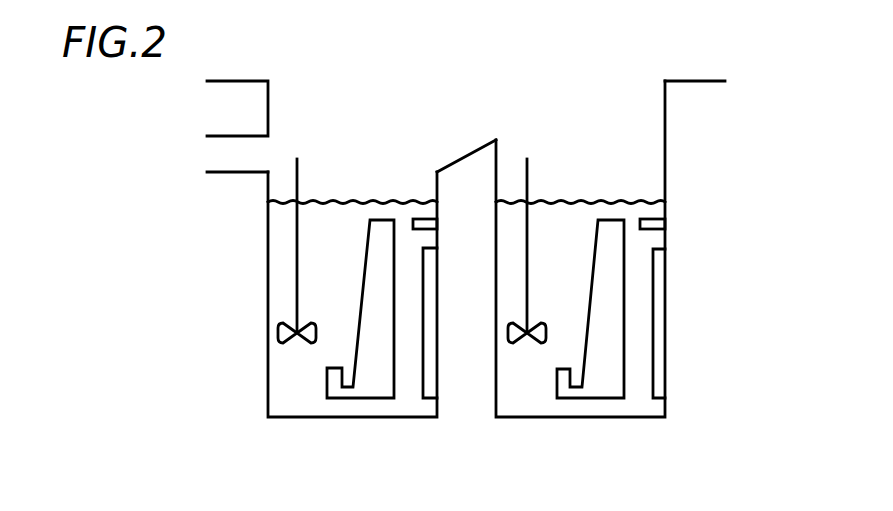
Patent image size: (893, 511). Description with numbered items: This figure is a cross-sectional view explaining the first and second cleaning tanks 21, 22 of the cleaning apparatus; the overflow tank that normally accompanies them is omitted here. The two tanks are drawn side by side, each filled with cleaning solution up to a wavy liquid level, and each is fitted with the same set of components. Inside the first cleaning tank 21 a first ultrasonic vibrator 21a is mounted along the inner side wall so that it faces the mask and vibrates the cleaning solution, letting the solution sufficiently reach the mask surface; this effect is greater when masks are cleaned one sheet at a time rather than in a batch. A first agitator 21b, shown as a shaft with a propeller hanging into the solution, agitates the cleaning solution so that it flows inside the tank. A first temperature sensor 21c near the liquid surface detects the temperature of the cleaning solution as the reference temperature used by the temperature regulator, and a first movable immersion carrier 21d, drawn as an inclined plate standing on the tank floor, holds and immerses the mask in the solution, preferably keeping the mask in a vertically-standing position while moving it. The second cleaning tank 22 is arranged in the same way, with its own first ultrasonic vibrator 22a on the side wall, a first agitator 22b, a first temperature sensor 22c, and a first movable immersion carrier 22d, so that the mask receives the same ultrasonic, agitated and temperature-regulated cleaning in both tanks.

The first cleaning tank 21 is at (421, 408).
The first ultrasonic vibrator 21a is at (430, 338).
The first agitator 21b is at (297, 279).
The first temperature sensor 21c is at (437, 224).
The first movable immersion carrier 21d is at (367, 388).
The second cleaning tank 22 is at (649, 408).
The first ultrasonic vibrator 22a is at (655, 339).
The first agitator 22b is at (527, 263).
The first temperature sensor 22c is at (665, 222).
The first movable immersion carrier 22d is at (595, 388).